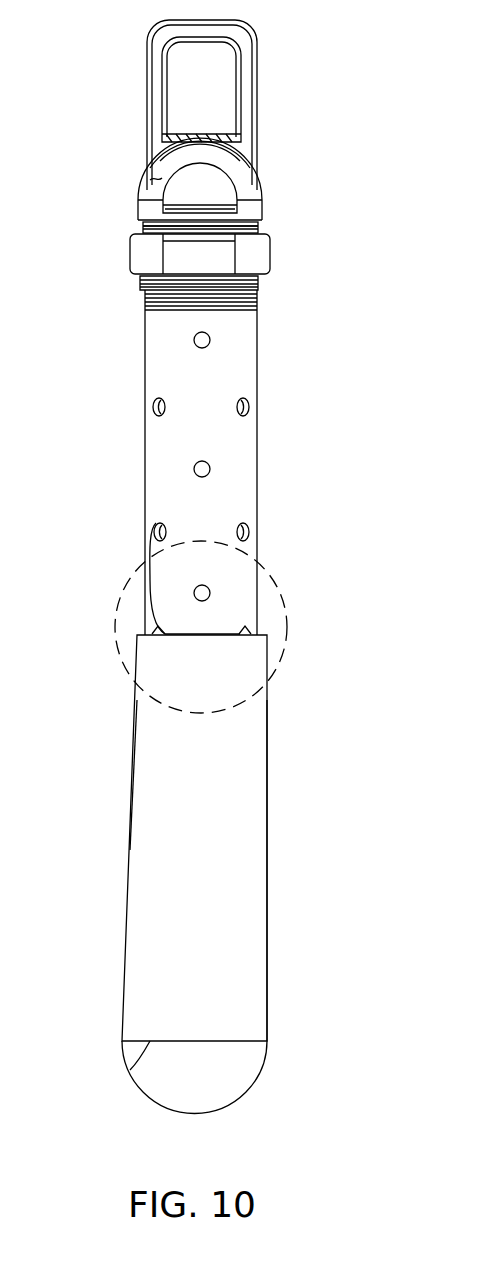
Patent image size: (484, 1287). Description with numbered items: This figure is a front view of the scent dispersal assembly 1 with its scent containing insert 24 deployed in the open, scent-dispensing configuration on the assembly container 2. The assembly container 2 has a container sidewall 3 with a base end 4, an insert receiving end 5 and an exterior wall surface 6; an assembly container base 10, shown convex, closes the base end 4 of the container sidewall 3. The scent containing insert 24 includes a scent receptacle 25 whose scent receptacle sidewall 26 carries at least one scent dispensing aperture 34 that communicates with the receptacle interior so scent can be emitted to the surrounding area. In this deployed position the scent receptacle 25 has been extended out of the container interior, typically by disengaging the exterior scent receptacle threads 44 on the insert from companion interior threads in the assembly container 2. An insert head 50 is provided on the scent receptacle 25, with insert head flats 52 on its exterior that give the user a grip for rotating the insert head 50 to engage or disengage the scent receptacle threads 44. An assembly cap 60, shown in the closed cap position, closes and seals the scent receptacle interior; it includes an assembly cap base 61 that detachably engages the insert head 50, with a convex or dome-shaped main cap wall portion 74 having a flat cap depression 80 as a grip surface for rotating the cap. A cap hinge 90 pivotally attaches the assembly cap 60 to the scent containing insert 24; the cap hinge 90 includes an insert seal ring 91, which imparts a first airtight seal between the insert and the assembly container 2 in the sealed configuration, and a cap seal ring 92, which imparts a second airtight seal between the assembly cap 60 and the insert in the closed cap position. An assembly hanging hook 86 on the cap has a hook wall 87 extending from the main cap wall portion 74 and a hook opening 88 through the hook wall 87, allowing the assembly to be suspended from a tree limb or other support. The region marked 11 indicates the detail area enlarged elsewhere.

The scent dispersal assembly 1 is at (61, 172).
The assembly container 2 is at (122, 771).
The container sidewall 3 is at (243, 815).
The base end 4 is at (120, 1072).
The insert receiving end 5 is at (212, 632).
The exterior wall surface 6 is at (200, 824).
The assembly container base 10 is at (235, 1078).
The detail region 11 is at (114, 630).
The scent containing insert 24 is at (312, 238).
The scent receptacle 25 is at (138, 461).
The scent receptacle sidewall 26 is at (233, 462).
The scent dispensing aperture 34 is at (155, 535).
The scent receptacle threads 44 is at (145, 298).
The insert head 50 is at (126, 264).
The insert head flats 52 is at (262, 252).
The assembly cap 60 is at (280, 134).
The assembly cap base 61 is at (269, 174).
The main cap wall portion 74 is at (152, 180).
The cap depression 80 is at (200, 178).
The assembly hanging hook 86 is at (266, 80).
The hook wall 87 is at (152, 72).
The hook opening 88 is at (185, 104).
The cap hinge 90 is at (133, 224).
The insert seal ring 91 is at (262, 283).
The cap seal ring 92 is at (262, 222).